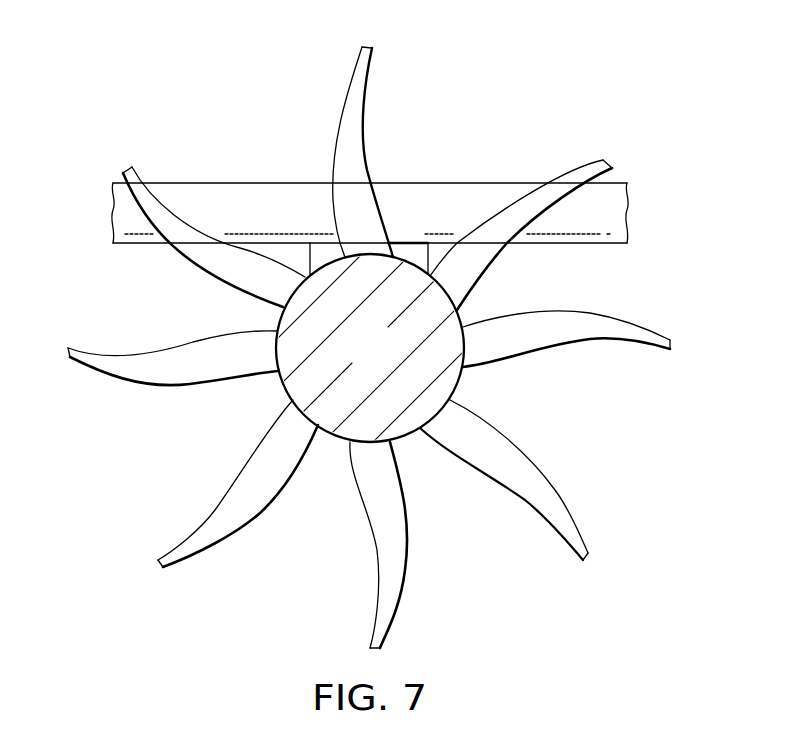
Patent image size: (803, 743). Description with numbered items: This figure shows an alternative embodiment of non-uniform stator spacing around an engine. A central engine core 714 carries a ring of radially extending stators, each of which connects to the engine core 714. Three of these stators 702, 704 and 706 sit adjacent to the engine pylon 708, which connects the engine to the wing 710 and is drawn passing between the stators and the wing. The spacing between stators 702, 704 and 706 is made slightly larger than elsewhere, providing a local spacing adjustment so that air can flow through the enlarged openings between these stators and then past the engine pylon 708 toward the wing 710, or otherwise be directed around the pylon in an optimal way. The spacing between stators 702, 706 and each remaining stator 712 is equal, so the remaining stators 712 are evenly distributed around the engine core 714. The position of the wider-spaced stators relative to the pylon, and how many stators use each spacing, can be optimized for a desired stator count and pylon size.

The stator 702 is at (207, 280).
The stator 704 is at (337, 112).
The stator 706 is at (562, 172).
The engine pylon 708 is at (410, 253).
The wing 710 is at (628, 213).
The stator 712 is at (562, 308).
The engine core 714 is at (392, 361).